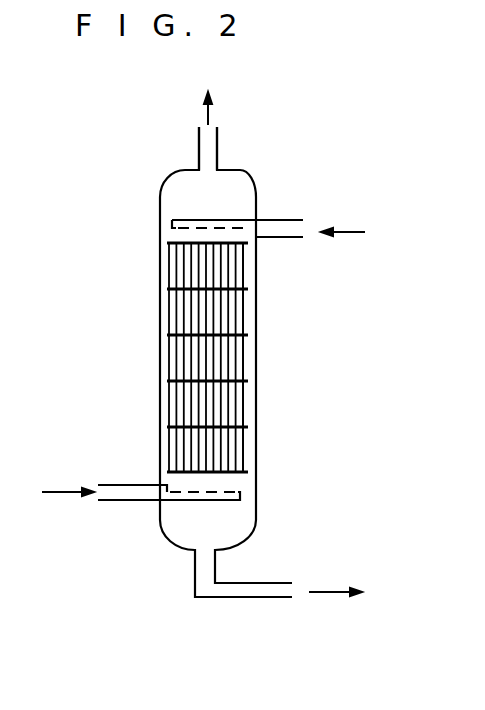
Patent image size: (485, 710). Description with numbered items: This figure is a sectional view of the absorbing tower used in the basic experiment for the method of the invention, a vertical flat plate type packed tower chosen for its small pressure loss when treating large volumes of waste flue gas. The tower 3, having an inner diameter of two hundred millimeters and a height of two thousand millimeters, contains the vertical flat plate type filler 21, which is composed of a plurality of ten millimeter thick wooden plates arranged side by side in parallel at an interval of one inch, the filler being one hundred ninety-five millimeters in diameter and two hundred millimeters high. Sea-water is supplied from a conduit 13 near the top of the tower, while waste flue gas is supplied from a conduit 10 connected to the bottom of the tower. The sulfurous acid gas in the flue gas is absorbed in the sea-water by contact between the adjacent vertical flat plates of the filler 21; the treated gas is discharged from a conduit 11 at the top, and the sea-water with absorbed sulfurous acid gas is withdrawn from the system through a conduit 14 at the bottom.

The tower 3 is at (160, 216).
The conduit 11 is at (217, 141).
The conduit 13 is at (283, 220).
The vertical flat plate type filler 21 is at (246, 298).
The conduit 10 is at (128, 501).
The conduit 14 is at (259, 583).